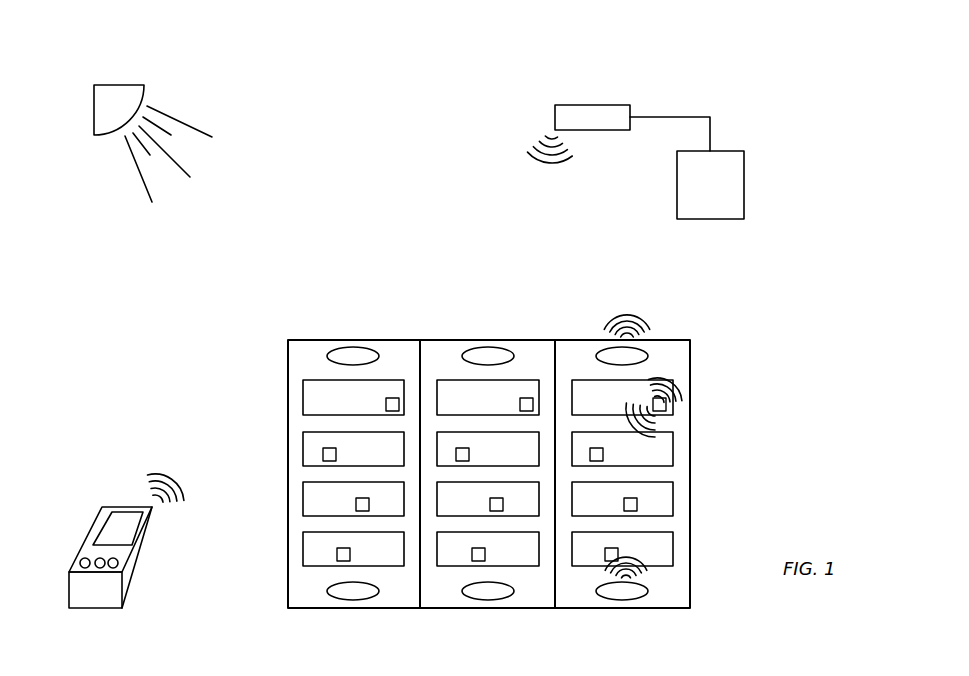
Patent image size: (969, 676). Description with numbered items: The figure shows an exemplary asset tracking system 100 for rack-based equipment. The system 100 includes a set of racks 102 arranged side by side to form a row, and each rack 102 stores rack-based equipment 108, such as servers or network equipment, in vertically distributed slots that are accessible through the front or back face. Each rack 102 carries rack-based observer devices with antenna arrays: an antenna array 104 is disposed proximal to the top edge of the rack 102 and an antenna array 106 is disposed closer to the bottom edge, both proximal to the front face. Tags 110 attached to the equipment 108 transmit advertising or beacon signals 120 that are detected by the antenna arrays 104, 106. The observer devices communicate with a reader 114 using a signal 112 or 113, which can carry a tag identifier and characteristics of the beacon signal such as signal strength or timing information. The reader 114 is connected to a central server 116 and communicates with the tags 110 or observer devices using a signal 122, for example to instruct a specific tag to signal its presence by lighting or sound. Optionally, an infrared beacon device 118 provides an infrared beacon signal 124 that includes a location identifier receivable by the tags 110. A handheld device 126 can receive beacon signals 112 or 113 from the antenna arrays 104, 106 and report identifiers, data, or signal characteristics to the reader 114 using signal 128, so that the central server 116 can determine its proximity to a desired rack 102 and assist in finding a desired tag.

The system 100 is at (737, 37).
The rack 102 is at (362, 340).
The antenna array 104 is at (353, 347).
The antenna array 106 is at (345, 600).
The rack-based equipment 108 is at (303, 391).
The tag 110 is at (391, 398).
The signal 112 is at (612, 315).
The signal 113 is at (645, 558).
The reader 114 is at (593, 105).
The central server 116 is at (731, 150).
The infrared beacon device 118 is at (127, 85).
The beacon signal 120 is at (672, 376).
The signal 122 is at (527, 155).
The infrared beacon signal 124 is at (206, 120).
The handheld device 126 is at (137, 570).
The signal 128 is at (158, 472).